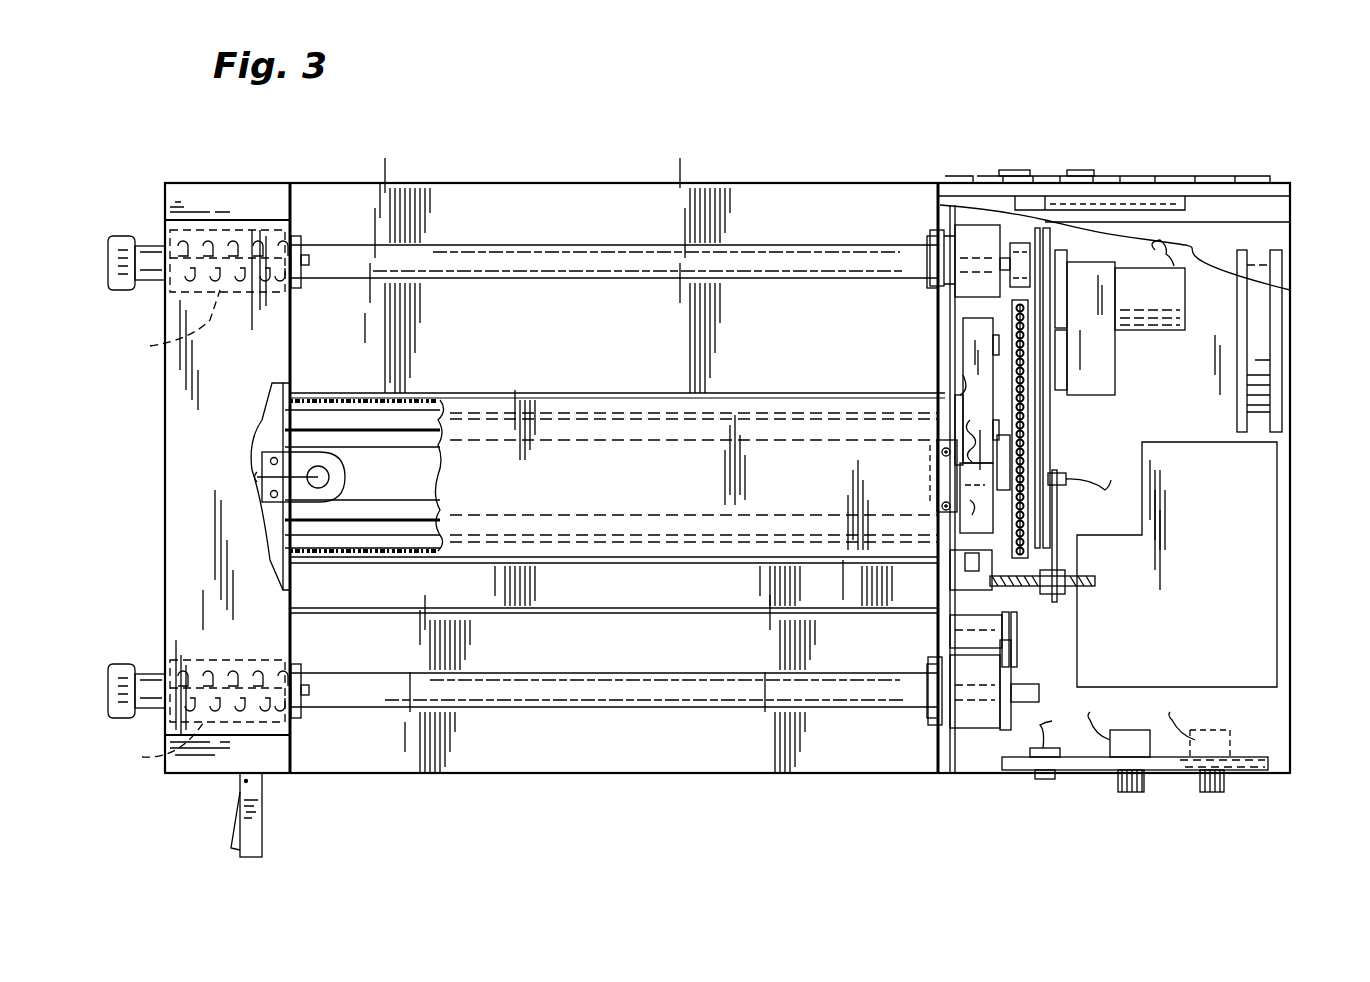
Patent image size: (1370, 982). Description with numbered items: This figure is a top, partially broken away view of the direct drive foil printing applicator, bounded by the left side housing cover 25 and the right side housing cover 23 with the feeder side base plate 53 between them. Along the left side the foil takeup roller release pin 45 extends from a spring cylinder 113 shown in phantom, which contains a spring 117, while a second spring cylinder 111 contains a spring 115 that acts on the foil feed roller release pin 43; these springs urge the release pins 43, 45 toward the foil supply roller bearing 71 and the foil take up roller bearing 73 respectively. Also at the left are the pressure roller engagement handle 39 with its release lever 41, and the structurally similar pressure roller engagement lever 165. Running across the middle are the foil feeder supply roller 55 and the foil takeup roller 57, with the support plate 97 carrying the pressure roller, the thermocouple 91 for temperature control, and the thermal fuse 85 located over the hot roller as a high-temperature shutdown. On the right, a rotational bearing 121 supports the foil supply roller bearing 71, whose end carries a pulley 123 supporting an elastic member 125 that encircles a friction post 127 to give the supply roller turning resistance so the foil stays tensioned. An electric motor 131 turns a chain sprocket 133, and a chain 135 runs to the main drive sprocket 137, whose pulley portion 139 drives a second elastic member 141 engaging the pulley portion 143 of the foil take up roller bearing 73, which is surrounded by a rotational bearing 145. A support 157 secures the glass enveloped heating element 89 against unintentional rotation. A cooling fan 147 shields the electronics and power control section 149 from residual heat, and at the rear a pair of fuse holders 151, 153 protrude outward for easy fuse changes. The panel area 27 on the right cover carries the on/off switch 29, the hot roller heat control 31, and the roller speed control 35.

The right side housing cover 23 is at (1300, 190).
The left side housing cover 25 is at (205, 183).
The panel area 27 is at (1262, 770).
The on/off switch 29 is at (1045, 779).
The hot roller heat control 31 is at (1130, 792).
The roller speed control 35 is at (1212, 792).
The pressure roller engagement handle 39 is at (252, 857).
The release lever 41 is at (228, 838).
The foil feed roller release pin 43 is at (113, 690).
The foil takeup roller release pin 45 is at (118, 250).
The feeder side base plate 53 is at (530, 765).
The foil feeder supply roller 55 is at (335, 700).
The foil takeup roller 57 is at (345, 245).
The foil supply roller bearing 71 is at (1039, 693).
The foil take up roller bearing 73 is at (1025, 243).
The thermal fuse 85 is at (935, 468).
The glass enveloped heating element 89 is at (1062, 485).
The thermocouple 91 is at (330, 463).
The support plate 97 is at (957, 395).
The spring cylinder 111 is at (195, 660).
The spring cylinder 113 is at (210, 283).
The spring 115 is at (149, 745).
The spring 117 is at (156, 325).
The rotational bearing 121 is at (968, 728).
The pulley 123 is at (1010, 728).
The elastic member 125 is at (1012, 668).
The friction post 127 is at (990, 612).
The electric motor 131 is at (1105, 337).
The chain sprocket 133 is at (1062, 340).
The chain 135 is at (968, 320).
The main drive sprocket 137 is at (1010, 462).
The pulley portion 139 is at (1052, 440).
The second elastic member 141 is at (1050, 395).
The pulley portion 143 is at (1046, 228).
The rotational bearing 145 is at (968, 238).
The cooling fan 147 is at (1265, 313).
The electronics and power control section 149 is at (1248, 641).
The fuse holder 151 is at (1012, 170).
The fuse holder 153 is at (1082, 170).
The support 157 is at (1057, 555).
The pressure roller engagement lever 165 is at (1010, 357).